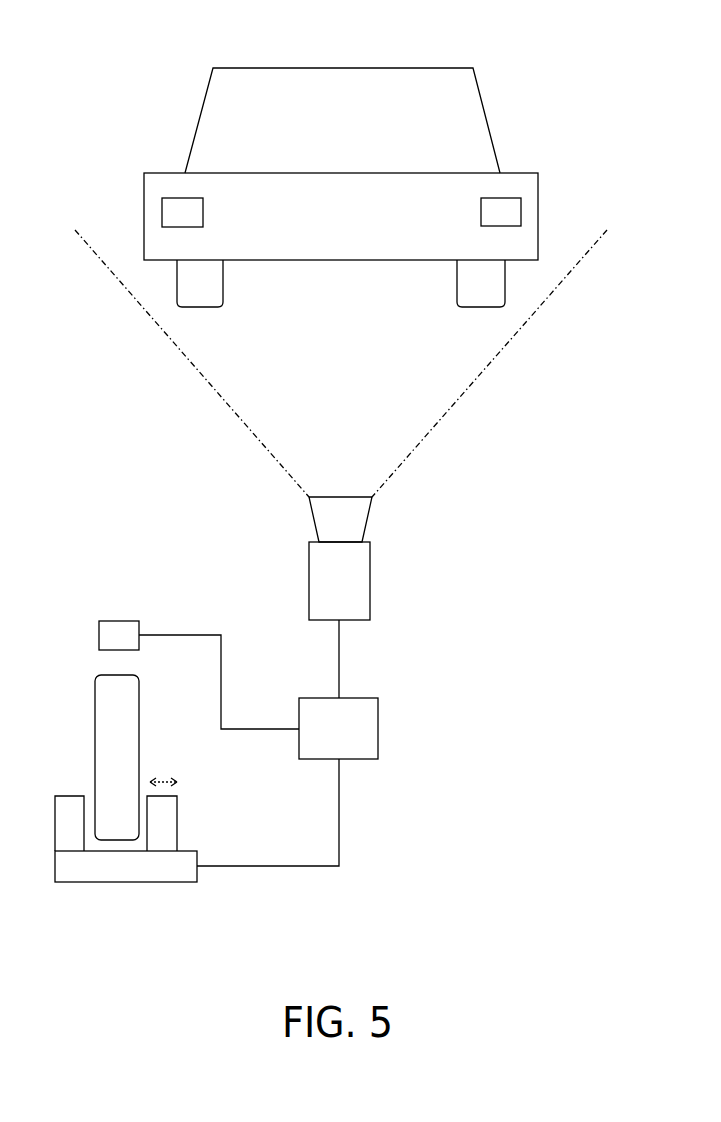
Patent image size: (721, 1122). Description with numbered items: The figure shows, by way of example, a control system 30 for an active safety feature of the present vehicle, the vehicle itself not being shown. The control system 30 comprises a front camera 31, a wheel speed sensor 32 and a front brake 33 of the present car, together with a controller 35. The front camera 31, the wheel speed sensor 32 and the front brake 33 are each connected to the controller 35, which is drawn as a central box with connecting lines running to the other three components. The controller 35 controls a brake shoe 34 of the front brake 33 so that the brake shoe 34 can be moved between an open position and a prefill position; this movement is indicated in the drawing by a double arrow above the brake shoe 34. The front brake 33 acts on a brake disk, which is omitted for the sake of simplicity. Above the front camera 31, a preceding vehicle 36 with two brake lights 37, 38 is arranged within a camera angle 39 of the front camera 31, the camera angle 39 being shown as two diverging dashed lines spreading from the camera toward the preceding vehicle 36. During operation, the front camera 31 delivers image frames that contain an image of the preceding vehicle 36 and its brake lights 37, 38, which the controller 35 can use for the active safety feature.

The control system 30 is at (435, 672).
The front camera 31 is at (372, 579).
The wheel speed sensor 32 is at (119, 617).
The front brake 33 is at (128, 890).
The brake shoe 34 is at (180, 825).
The controller 35 is at (380, 728).
The preceding vehicle 36 is at (513, 92).
The brake light 37 is at (160, 212).
The brake light 38 is at (518, 212).
The camera angle 39 is at (490, 358).